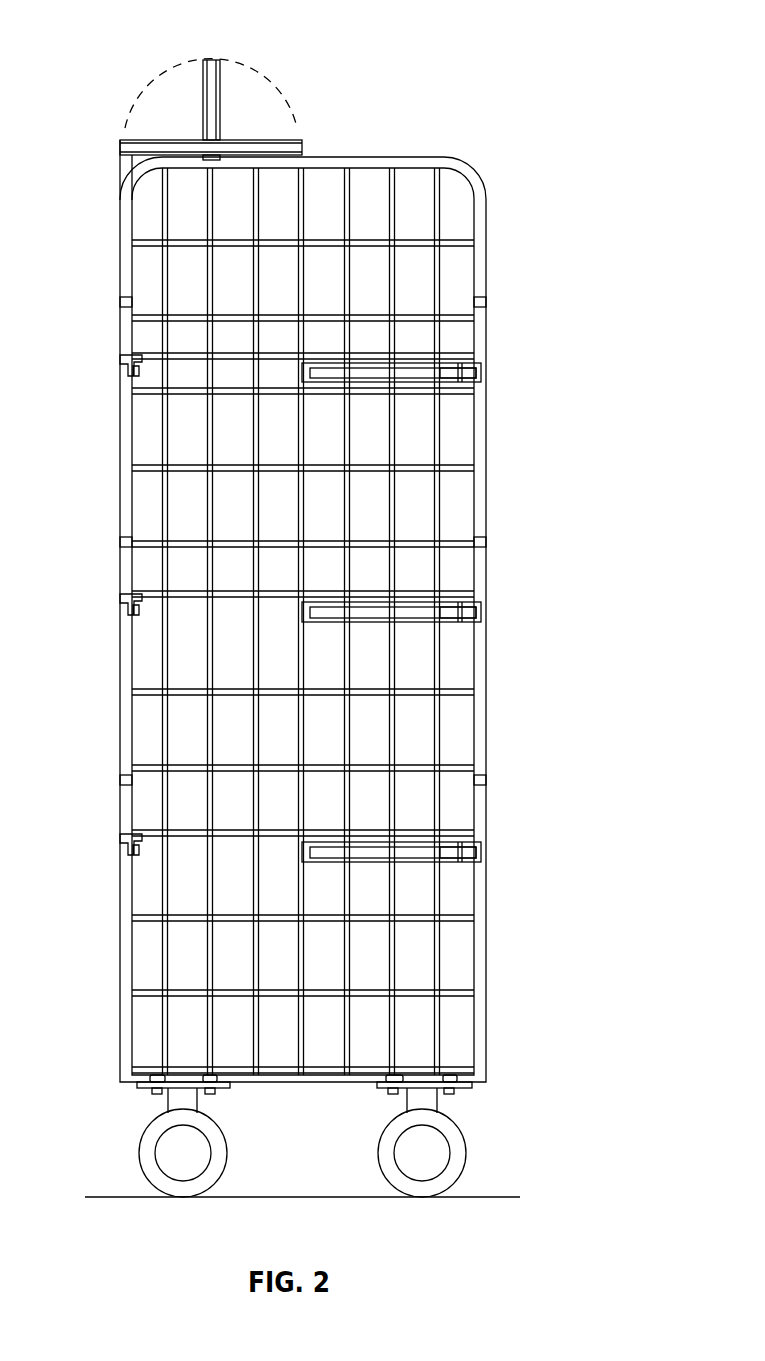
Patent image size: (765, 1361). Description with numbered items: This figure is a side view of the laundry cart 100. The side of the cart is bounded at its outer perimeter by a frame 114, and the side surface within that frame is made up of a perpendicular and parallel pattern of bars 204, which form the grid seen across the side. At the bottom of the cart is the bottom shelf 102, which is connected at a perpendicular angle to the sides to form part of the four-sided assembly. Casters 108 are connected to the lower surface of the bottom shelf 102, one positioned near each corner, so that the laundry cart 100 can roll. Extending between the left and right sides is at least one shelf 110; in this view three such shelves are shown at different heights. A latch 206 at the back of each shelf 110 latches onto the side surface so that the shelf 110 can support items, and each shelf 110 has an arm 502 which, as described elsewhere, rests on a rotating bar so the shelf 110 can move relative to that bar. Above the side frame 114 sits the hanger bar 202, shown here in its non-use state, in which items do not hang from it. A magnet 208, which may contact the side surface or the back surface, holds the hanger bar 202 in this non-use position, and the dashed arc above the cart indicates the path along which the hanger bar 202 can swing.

The laundry cart 100 is at (472, 74).
The bottom shelf 102 is at (352, 1078).
The casters 108 is at (148, 1135).
The shelf 110 is at (452, 360).
The frame 114 is at (480, 277).
The hanger bar 202 is at (143, 140).
The bars 204 is at (303, 278).
The latch 206 is at (120, 365).
The magnet 208 is at (212, 138).
The arm 502 is at (443, 383).